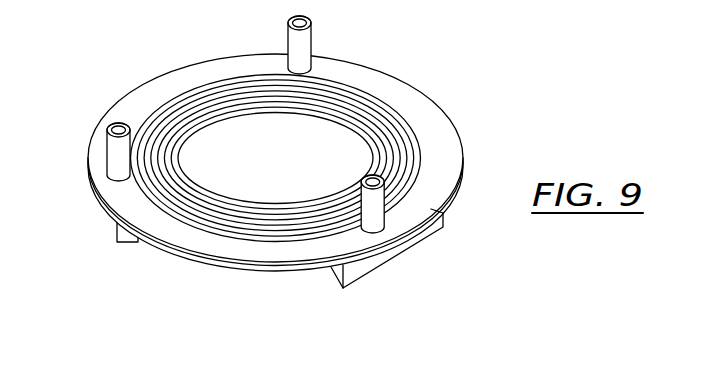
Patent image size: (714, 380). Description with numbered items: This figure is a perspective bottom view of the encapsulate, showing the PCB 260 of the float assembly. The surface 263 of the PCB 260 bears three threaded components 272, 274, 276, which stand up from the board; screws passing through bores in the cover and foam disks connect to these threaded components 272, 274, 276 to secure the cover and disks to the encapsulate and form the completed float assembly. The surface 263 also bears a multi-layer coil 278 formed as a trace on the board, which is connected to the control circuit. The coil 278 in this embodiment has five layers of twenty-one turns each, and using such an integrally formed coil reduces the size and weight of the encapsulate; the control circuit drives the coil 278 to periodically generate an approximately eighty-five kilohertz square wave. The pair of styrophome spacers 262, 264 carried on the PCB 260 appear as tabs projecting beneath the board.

The PCB 260 is at (449, 119).
The styrophome spacer 262 is at (116, 231).
The surface 263 is at (275, 214).
The styrophome spacer 264 is at (385, 259).
The threaded component 272 is at (114, 126).
The threaded component 274 is at (288, 19).
The threaded component 276 is at (378, 205).
The multi-layer coil 278 is at (197, 97).